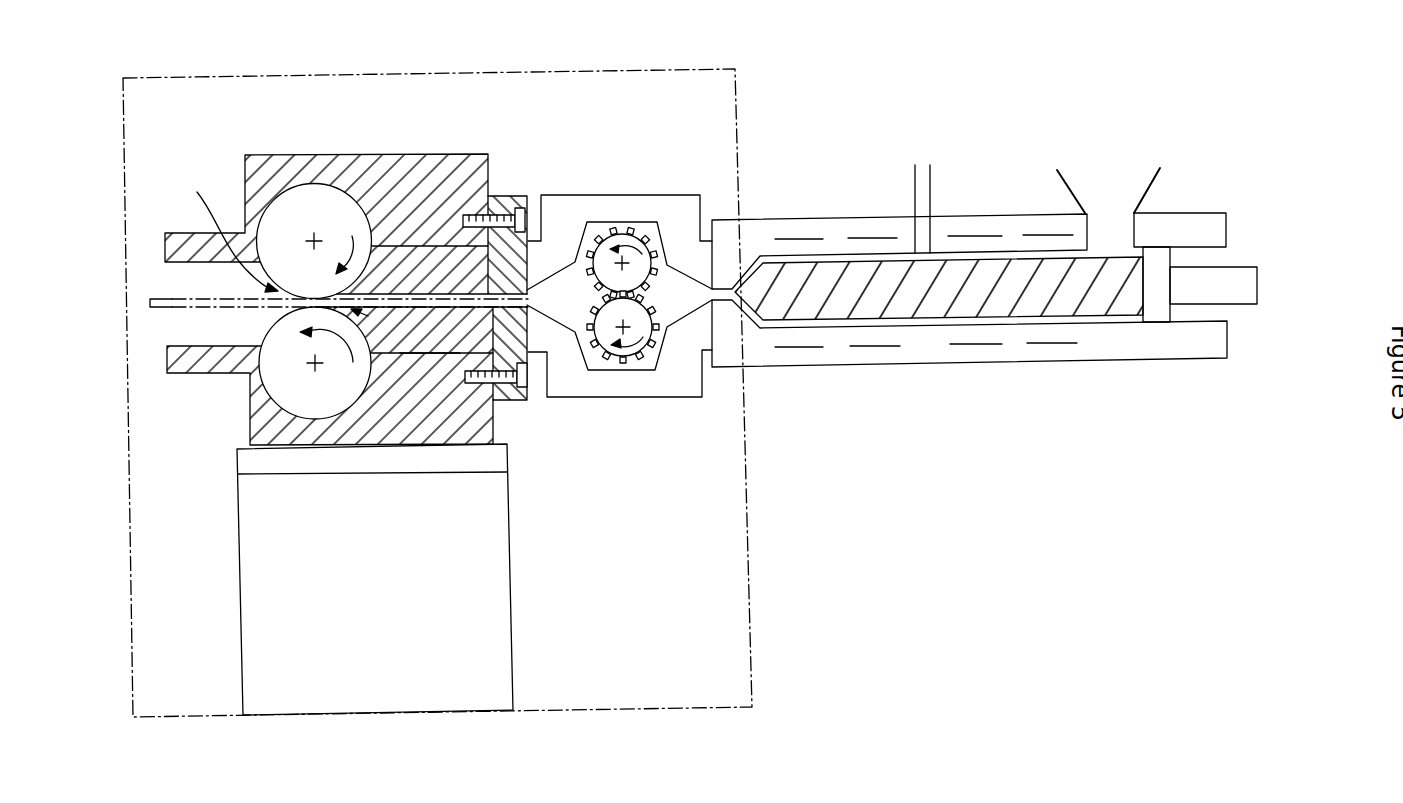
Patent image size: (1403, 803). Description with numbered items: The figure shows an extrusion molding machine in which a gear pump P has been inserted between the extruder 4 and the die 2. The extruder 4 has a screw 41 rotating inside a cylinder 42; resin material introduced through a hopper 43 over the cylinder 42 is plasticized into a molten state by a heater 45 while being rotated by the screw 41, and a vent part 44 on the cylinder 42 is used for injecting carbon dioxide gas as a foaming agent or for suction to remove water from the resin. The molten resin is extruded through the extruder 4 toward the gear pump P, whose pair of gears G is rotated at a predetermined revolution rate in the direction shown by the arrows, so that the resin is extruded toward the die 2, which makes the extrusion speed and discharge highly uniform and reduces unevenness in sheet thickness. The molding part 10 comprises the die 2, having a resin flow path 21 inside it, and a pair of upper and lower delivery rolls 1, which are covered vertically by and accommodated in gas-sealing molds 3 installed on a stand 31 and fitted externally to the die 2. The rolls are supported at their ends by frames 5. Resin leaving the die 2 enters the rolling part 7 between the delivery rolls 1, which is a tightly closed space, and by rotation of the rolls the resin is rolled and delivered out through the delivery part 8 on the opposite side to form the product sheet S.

The delivery rolls 1 is at (297, 202).
The die 2 is at (507, 195).
The gas-sealing molds 3 is at (407, 153).
The extruder 4 is at (800, 220).
The frames 5 is at (460, 72).
The rolling part 7 is at (428, 353).
The delivery part 8 is at (271, 249).
The molding part 10 is at (710, 130).
The resin flow path 21 is at (460, 300).
The stand 31 is at (260, 557).
The screw 41 is at (920, 302).
The cylinder 42 is at (1133, 359).
The hopper 43 is at (1160, 168).
The vent part 44 is at (931, 168).
The heater 45 is at (1053, 343).
The gears G is at (642, 257).
The gear pump P is at (601, 195).
The product sheet S is at (197, 296).